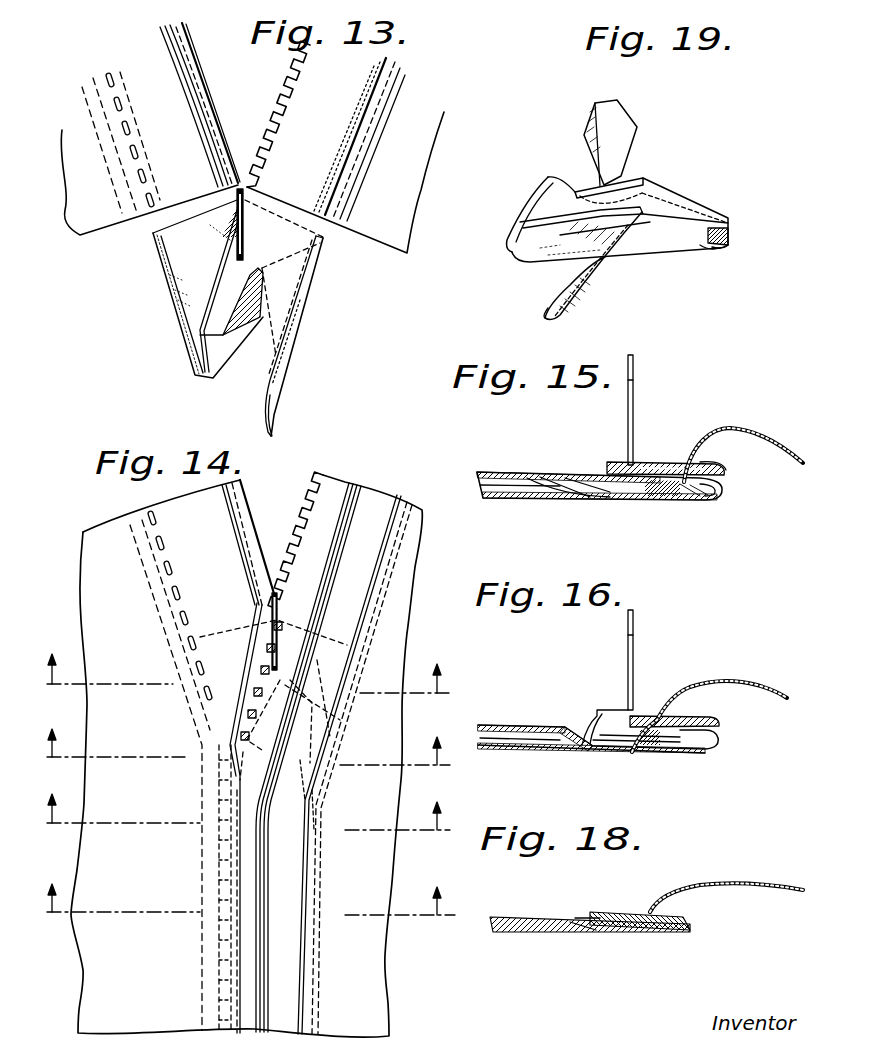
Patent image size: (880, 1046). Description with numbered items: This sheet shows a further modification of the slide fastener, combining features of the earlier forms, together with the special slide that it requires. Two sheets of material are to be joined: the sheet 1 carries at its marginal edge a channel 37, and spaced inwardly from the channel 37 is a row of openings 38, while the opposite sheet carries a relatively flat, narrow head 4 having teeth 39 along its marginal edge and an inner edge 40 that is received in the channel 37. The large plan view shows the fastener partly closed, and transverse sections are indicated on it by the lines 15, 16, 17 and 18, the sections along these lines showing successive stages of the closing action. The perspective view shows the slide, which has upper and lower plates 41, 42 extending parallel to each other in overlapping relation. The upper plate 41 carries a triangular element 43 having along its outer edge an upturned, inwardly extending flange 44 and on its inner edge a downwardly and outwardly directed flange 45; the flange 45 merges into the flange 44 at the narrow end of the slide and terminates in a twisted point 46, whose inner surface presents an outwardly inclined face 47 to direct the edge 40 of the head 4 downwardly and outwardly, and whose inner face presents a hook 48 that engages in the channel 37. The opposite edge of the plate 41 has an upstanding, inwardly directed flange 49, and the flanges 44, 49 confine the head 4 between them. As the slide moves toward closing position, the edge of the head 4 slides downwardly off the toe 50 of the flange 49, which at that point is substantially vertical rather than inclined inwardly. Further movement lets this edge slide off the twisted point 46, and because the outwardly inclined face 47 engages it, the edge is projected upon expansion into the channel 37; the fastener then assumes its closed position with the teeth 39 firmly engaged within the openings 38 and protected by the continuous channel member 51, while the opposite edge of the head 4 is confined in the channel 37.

In FIG. 13, the sheet of material 1 is at (137, 55).
In FIG. 14, the sheet of material 1 is at (246, 756).
In FIG. 13, the head 4 is at (343, 61).
In FIG. 15, the head 4 is at (640, 470).
In FIG. 18, the head 4 is at (607, 923).
In FIG. 14, the head 4 is at (334, 758).
In FIG. 13, the channel 37 is at (188, 60).
In FIG. 15, the channel 37 is at (723, 500).
In FIG. 16, the channel 37 is at (710, 753).
In FIG. 18, the channel 37 is at (676, 922).
In FIG. 13, the openings 38 is at (113, 88).
In FIG. 14, the openings 38 is at (180, 770).
In FIG. 13, the teeth 39 is at (287, 108).
In FIG. 18, the teeth 39 is at (587, 926).
In FIG. 14, the teeth 39 is at (295, 544).
In FIG. 13, the inner edge 40 is at (334, 184).
In FIG. 15, the inner edge 40 is at (714, 450).
In FIG. 16, the inner edge 40 is at (667, 713).
In FIG. 18, the inner edge 40 is at (726, 897).
In FIG. 13, the upper plate 41 is at (246, 233).
In FIG. 19, the upper plate 41 is at (668, 210).
In FIG. 15, the upper plate 41 is at (630, 410).
In FIG. 16, the upper plate 41 is at (630, 660).
In FIG. 14, the upper plate 41 is at (312, 633).
In FIG. 13, the lower plate 42 is at (295, 282).
In FIG. 19, the lower plate 42 is at (707, 250).
In FIG. 14, the lower plate 42 is at (317, 705).
In FIG. 13, the triangular element 43 is at (278, 313).
In FIG. 19, the triangular element 43 is at (652, 225).
In FIG. 14, the triangular element 43 is at (310, 733).
In FIG. 13, the upturned inwardly extending flange 44 is at (312, 262).
In FIG. 19, the upturned inwardly extending flange 44 is at (677, 233).
In FIG. 15, the upturned inwardly extending flange 44 is at (722, 468).
In FIG. 16, the upturned inwardly extending flange 44 is at (690, 722).
In FIG. 14, the upturned inwardly extending flange 44 is at (340, 677).
In FIG. 13, the downwardly and outwardly directed flange 45 is at (276, 345).
In FIG. 19, the downwardly and outwardly directed flange 45 is at (602, 277).
In FIG. 14, the downwardly and outwardly directed flange 45 is at (313, 762).
In FIG. 13, the twisted point 46 is at (279, 408).
In FIG. 19, the twisted point 46 is at (562, 315).
In FIG. 14, the twisted point 46 is at (310, 812).
In FIG. 15, the outwardly inclined face 47 is at (632, 498).
In FIG. 16, the outwardly inclined face 47 is at (660, 747).
In FIG. 15, the hook 48 is at (672, 500).
In FIG. 19, the upstanding inwardly directed flange 49 is at (622, 187).
In FIG. 13, the toe 50 is at (195, 360).
In FIG. 19, the toe 50 is at (535, 208).
In FIG. 16, the toe 50 is at (592, 725).
In FIG. 14, the toe 50 is at (233, 760).
In FIG. 18, the continuous channel member 51 is at (583, 929).
In FIG. 14, the section line 15— 15 is at (250, 688).
In FIG. 14, the section line 16— 16 is at (249, 762).
In FIG. 14, the section line 17— 17 is at (246, 829).
In FIG. 14, the section line 18— 18 is at (248, 918).